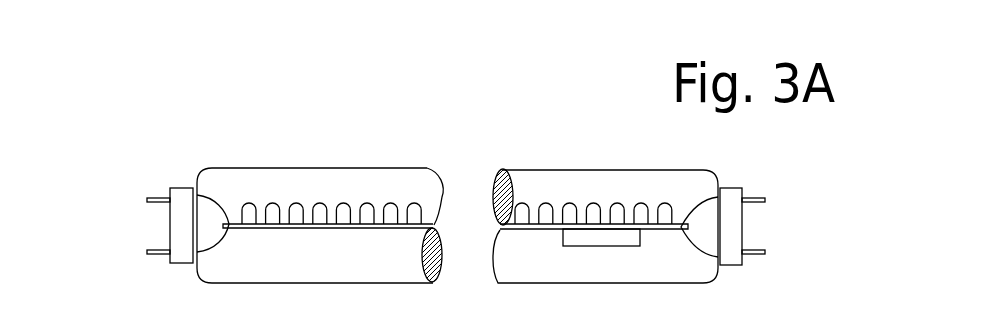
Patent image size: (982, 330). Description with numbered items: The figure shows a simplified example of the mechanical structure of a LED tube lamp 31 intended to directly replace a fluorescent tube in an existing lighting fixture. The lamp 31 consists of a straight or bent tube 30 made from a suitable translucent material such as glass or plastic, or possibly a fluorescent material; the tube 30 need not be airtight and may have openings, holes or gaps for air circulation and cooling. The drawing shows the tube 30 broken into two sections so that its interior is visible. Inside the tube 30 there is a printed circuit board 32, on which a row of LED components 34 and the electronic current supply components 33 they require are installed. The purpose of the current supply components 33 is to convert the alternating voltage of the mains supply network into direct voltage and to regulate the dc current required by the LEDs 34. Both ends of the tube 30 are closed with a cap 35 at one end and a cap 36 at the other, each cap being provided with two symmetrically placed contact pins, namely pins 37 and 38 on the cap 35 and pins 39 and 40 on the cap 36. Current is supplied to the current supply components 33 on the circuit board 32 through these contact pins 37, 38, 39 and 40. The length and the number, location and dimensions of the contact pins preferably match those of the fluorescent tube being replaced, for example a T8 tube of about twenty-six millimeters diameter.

The tube 30 is at (597, 170).
The lamp 31 is at (402, 150).
The printed circuit board 32 is at (302, 232).
The electronic current supply components 33 is at (607, 246).
The LED components 34 is at (293, 200).
The cap 35 is at (183, 188).
The cap 36 is at (735, 188).
The contact pin 37 is at (158, 198).
The contact pin 38 is at (160, 254).
The contact pin 39 is at (760, 198).
The contact pin 40 is at (763, 255).